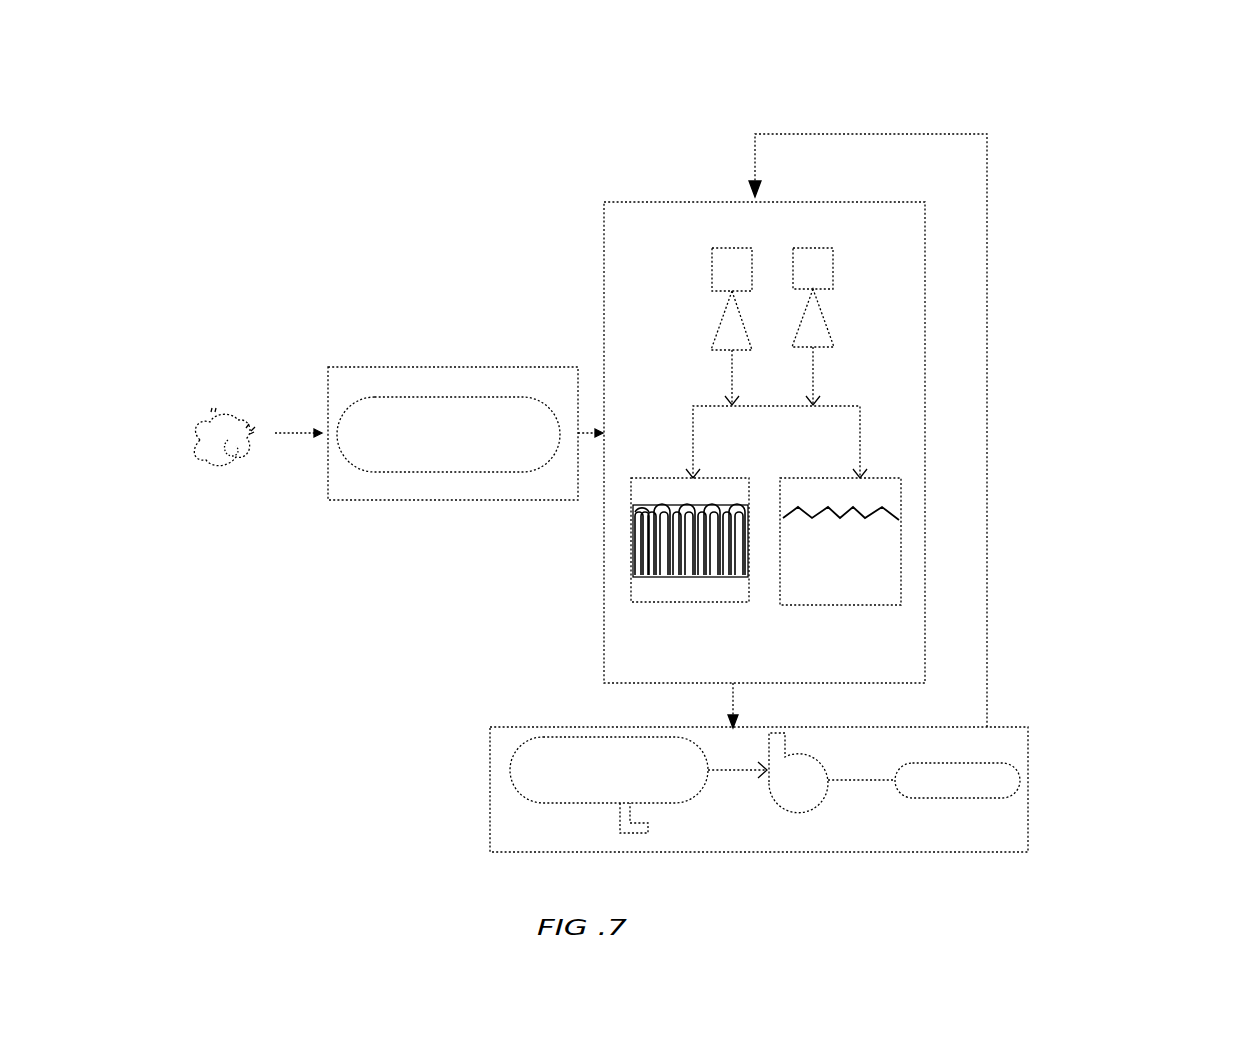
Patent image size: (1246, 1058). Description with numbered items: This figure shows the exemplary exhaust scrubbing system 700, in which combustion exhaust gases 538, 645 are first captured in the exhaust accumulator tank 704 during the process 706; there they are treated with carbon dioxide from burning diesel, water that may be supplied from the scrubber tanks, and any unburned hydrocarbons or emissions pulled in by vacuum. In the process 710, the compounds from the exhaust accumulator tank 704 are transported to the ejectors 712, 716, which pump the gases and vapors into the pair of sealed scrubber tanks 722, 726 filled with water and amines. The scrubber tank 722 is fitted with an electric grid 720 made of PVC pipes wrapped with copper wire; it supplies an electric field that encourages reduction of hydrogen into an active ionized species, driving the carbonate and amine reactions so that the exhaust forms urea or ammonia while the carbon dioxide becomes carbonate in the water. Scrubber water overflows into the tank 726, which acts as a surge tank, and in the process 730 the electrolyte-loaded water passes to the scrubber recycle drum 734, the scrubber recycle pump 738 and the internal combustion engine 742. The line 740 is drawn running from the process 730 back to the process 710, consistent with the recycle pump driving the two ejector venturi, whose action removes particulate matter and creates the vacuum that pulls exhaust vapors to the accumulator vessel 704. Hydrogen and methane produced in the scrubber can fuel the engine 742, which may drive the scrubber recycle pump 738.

The fluid heating and circulation system 700 is at (1160, 75).
The combustion exhaust gases 538 is at (167, 441).
The fuel 645 is at (167, 471).
The exhaust accumulator tank 704 is at (470, 446).
The process 706 is at (463, 365).
The process 710 is at (633, 192).
The ejector 712 is at (752, 241).
The ejector 716 is at (835, 241).
The electric grid 720 is at (638, 528).
The scrubber tank 722 is at (708, 631).
The scrubber tank 726 is at (868, 631).
The process 730 is at (1008, 713).
The scrubber recycle drum 734 is at (637, 781).
The scrubber recycle pump 738 is at (823, 845).
The return line 740 is at (990, 382).
The internal combustion engine 742 is at (980, 791).